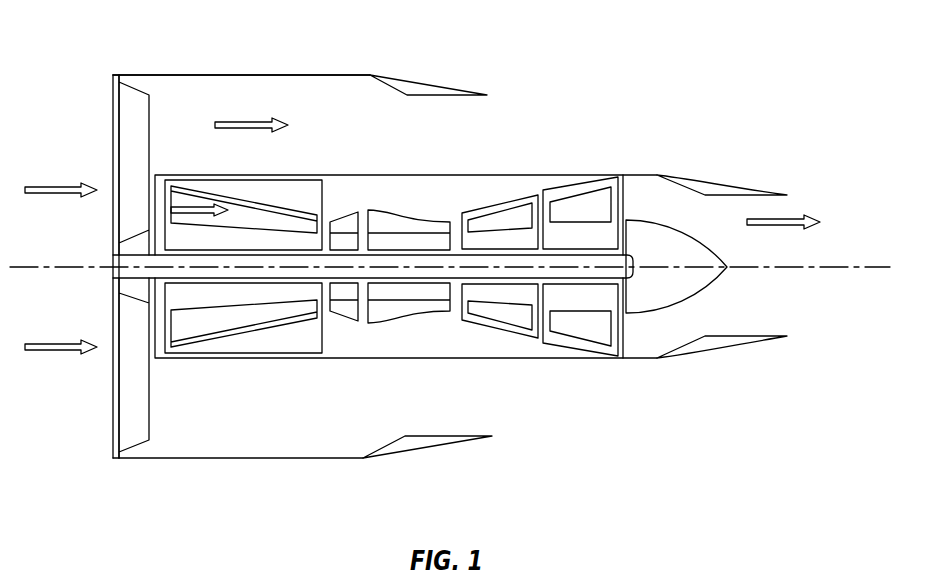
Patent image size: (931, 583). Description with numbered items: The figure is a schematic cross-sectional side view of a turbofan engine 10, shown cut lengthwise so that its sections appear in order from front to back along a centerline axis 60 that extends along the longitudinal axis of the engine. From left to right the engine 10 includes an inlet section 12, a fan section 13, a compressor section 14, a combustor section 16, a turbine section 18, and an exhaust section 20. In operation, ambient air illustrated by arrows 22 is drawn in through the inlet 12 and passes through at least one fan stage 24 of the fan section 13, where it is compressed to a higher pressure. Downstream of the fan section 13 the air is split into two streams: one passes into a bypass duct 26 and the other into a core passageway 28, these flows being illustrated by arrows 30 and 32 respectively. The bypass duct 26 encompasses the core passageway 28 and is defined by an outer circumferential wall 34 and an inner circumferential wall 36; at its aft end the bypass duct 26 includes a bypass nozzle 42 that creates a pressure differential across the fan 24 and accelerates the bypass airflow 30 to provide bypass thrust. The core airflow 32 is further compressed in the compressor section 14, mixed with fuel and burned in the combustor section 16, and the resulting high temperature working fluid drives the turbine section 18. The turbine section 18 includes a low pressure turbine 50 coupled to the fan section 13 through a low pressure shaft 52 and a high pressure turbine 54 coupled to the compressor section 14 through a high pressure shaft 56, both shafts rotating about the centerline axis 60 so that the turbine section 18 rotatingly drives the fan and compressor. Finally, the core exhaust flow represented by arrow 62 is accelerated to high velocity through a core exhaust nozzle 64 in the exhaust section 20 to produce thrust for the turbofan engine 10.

The turbofan engine 10 is at (573, 55).
The inlet section 12 is at (113, 135).
The fan section 13 is at (135, 398).
The compressor section 14 is at (275, 188).
The combustor section 16 is at (396, 335).
The turbine section 18 is at (536, 171).
The exhaust section 20 is at (770, 164).
The arrows (inlet air) 22 is at (48, 194).
The fan stage 24 is at (132, 106).
The bypass duct 26 is at (217, 95).
The core passageway 28 is at (197, 323).
The arrows (bypass airflow) 30 is at (235, 131).
The arrows (core airflow) 32 is at (185, 203).
The outer circumferential wall 34 is at (357, 73).
The inner circumferential wall 36 is at (378, 173).
The bypass nozzle 42 is at (478, 90).
The low pressure turbine 50 is at (595, 203).
The low pressure shaft 52 is at (303, 284).
The high pressure turbine 54 is at (494, 220).
The high pressure shaft 56 is at (452, 285).
The centerline axis 60 is at (837, 268).
The arrow (core exhaust flow) 62 is at (763, 229).
The core exhaust nozzle 64 is at (728, 342).